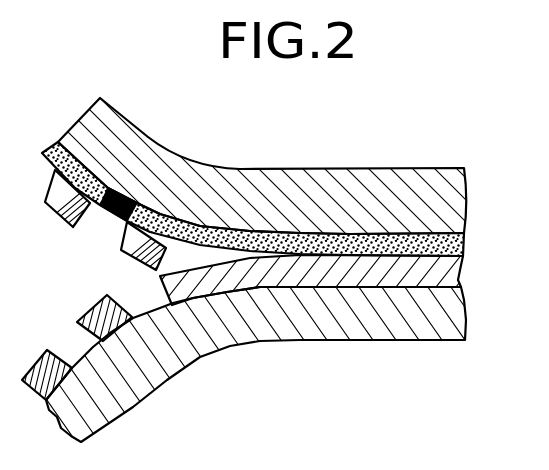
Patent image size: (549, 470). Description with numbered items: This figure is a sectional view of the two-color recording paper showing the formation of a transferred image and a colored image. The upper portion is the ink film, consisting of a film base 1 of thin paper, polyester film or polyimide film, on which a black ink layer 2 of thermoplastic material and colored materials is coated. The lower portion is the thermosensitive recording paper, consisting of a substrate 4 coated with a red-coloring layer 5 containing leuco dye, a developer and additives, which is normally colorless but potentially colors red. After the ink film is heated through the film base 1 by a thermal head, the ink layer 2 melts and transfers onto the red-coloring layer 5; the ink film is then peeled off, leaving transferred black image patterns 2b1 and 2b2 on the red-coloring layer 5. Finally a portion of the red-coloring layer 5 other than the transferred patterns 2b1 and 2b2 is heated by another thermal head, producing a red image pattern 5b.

The film base 1 is at (462, 313).
The ink layer 2 is at (460, 275).
The substrate 4 is at (462, 212).
The red-coloring layer 5 is at (463, 243).
The transferred black image pattern 2b1 is at (57, 215).
The red image pattern 5b is at (113, 219).
The transferred black image pattern 2b2 is at (132, 251).